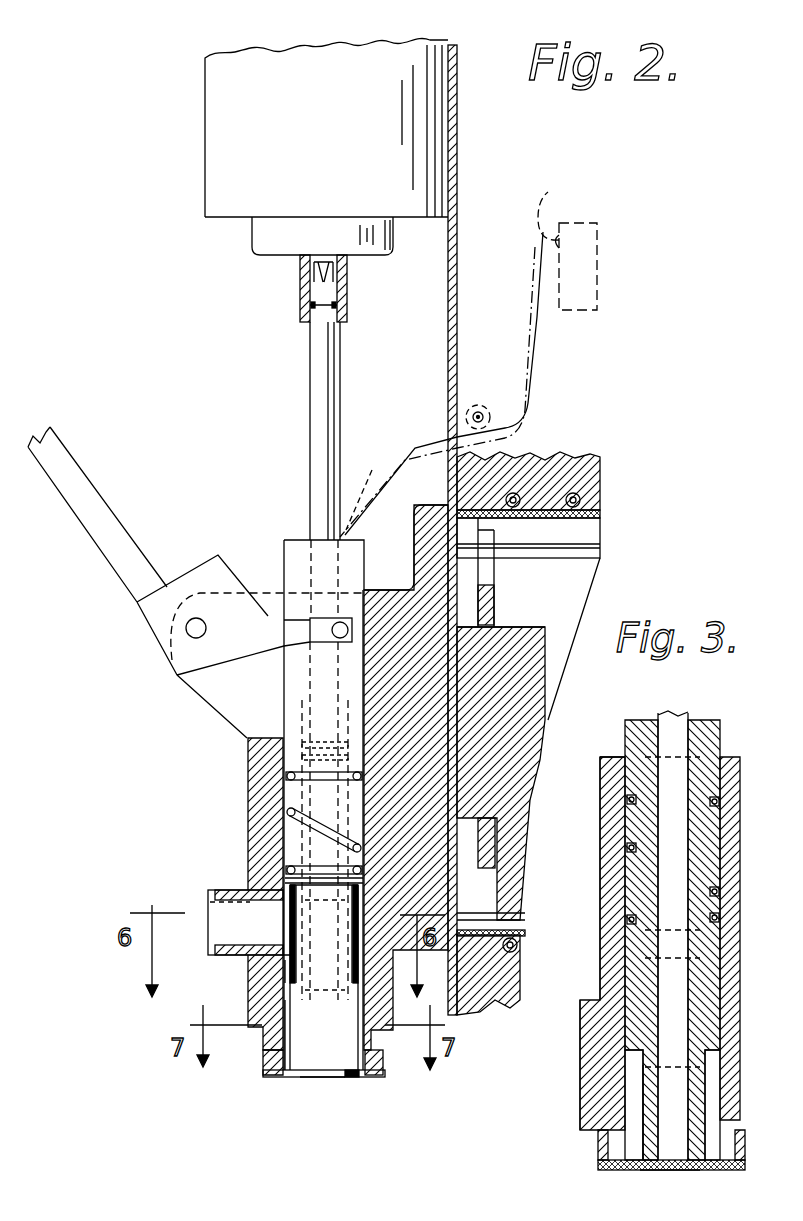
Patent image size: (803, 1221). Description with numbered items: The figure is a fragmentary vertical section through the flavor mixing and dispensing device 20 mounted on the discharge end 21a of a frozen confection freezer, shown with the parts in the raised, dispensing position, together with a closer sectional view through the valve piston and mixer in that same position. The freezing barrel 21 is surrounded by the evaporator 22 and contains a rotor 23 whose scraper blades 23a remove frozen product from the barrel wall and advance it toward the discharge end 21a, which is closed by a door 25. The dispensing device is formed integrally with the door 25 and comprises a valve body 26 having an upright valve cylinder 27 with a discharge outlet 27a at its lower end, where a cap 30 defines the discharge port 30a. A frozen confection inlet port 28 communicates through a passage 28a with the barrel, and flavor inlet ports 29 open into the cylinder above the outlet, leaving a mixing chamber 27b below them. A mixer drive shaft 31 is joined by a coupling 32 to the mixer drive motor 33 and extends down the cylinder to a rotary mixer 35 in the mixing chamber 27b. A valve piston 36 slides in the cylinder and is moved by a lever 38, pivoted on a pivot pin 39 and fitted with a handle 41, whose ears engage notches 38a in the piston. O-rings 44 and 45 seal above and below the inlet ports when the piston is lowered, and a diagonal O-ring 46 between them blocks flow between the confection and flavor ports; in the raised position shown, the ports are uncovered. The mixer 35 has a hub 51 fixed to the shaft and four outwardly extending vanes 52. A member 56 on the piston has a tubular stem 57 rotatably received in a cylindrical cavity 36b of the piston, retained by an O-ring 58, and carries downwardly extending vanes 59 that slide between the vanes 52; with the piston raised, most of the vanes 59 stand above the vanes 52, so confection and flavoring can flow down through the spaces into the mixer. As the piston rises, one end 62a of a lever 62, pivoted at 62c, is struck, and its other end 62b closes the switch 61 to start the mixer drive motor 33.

In FIG. 2, the flavor mixing and dispensing device 20 is at (240, 790).
In FIG. 2, the freezing barrel 21 is at (598, 510).
In FIG. 2, the discharge end 21a is at (482, 508).
In FIG. 2, the evaporator 22 is at (597, 466).
In FIG. 2, the rotor 23 is at (600, 535).
In FIG. 2, the scraper blades 23a is at (555, 548).
In FIG. 2, the door 25 is at (415, 545).
In FIG. 2, the valve body 26 is at (246, 742).
In FIG. 2, the valve cylinder 27 is at (288, 745).
In FIG. 3, the valve cylinder 27 is at (628, 775).
In FIG. 2, the discharge outlet 27a is at (283, 1072).
In FIG. 3, the discharge outlet 27a is at (620, 1145).
In FIG. 2, the mixing chamber 27b is at (287, 1022).
In FIG. 2, the frozen confection inlet port 28 is at (368, 880).
In FIG. 2, the passage 28a is at (438, 840).
In FIG. 2, the flavor inlet ports 29 is at (248, 880).
In FIG. 2, the cap 30 is at (372, 1076).
In FIG. 3, the cap 30 is at (600, 1165).
In FIG. 2, the discharge port 30a is at (310, 1078).
In FIG. 3, the discharge port 30a is at (640, 1172).
In FIG. 2, the mixer drive shaft 31 is at (340, 440).
In FIG. 3, the mixer drive shaft 31 is at (677, 722).
In FIG. 2, the coupling 32 is at (347, 305).
In FIG. 2, the mixer drive motor 33 is at (222, 205).
In FIG. 2, the rotary mixer 35 is at (356, 1078).
In FIG. 2, the valve piston 36 is at (360, 808).
In FIG. 3, the cylindrical cavity 36b is at (628, 882).
In FIG. 2, the lever 38 is at (240, 615).
In FIG. 2, the notches 38a is at (335, 620).
In FIG. 2, the pivot pin 39 is at (190, 632).
In FIG. 2, the handle 41 is at (78, 485).
In FIG. 2, the O-ring 44 is at (249, 804).
In FIG. 2, the O-ring 45 is at (262, 852).
In FIG. 2, the diagonal O-ring 46 is at (362, 846).
In FIG. 3, the hub 51 is at (652, 1150).
In FIG. 2, the vanes 52 is at (303, 1040).
In FIG. 3, the vanes 52 is at (625, 1085).
In FIG. 2, the member 56 is at (283, 955).
In FIG. 3, the tubular stem 57 is at (630, 845).
In FIG. 3, the O-ring 58 is at (628, 800).
In FIG. 3, the vanes 59 is at (585, 1030).
In FIG. 2, the switch 61 is at (595, 290).
In FIG. 2, the lever 62 is at (530, 414).
In FIG. 2, the end of lever 62a is at (362, 510).
In FIG. 2, the end of lever 62b is at (557, 214).
In FIG. 2, the pivot 62c is at (478, 405).